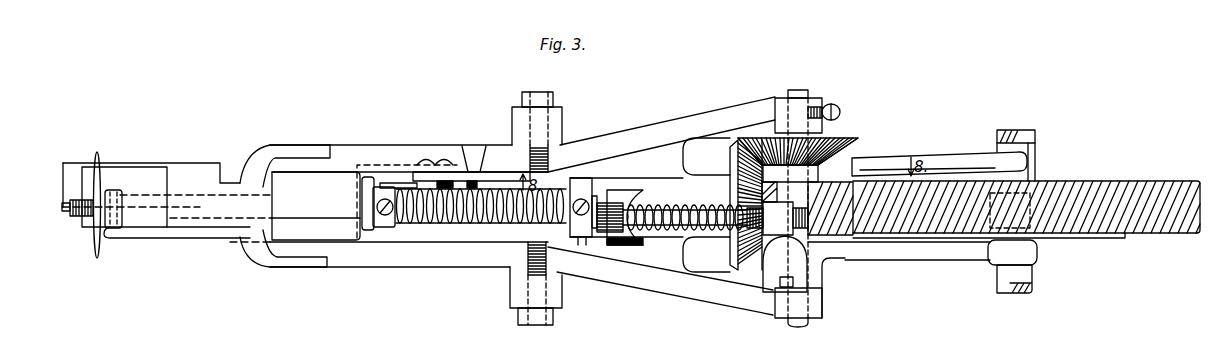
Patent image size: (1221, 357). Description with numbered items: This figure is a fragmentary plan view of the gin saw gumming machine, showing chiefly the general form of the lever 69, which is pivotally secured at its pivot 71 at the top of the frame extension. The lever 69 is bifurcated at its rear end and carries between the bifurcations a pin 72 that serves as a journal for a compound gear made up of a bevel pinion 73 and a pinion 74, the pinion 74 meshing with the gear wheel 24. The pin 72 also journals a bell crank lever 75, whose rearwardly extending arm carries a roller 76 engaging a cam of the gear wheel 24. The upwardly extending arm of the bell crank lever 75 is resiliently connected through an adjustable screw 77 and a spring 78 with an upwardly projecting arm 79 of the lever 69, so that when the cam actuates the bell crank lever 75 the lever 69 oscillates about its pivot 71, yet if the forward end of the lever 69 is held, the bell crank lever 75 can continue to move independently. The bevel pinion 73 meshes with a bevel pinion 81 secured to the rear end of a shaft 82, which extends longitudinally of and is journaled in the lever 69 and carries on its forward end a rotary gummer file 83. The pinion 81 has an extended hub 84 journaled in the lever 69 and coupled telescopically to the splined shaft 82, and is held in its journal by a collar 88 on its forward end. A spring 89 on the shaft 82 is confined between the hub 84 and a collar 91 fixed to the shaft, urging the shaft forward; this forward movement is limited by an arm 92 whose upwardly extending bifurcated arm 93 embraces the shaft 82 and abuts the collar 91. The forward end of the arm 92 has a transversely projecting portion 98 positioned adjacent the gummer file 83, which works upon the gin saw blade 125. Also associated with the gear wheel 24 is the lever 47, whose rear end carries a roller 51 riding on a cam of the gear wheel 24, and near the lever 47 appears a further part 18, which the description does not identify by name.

The stud pin 18 is at (1031, 131).
The gear wheel 24 is at (1163, 233).
The lever 47 is at (936, 157).
The roller 51 is at (1033, 193).
The lever 69 is at (455, 263).
The pivot 71 is at (562, 118).
The pin 72 is at (803, 94).
The bevel pinion 73 is at (847, 136).
The pinion 74 is at (825, 193).
The bell crank lever 75 is at (883, 260).
The roller 76 is at (1038, 237).
The screw 77 is at (687, 229).
The spring 78 is at (661, 210).
The arm 79 is at (620, 200).
The bevel pinion 81 is at (732, 161).
The shaft 82 is at (303, 200).
The rotary gummer file 83 is at (100, 257).
The hub 84 is at (570, 229).
The collar 88 is at (582, 234).
The spring 89 is at (437, 222).
The collar 91 is at (384, 235).
The arm 92 is at (297, 238).
The bifurcated arm 93 is at (367, 183).
The transversely projecting portion 98 is at (123, 192).
The gin saw blade 125 is at (63, 210).